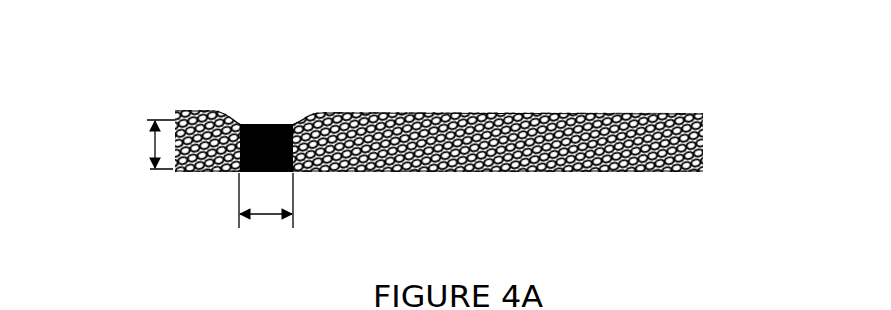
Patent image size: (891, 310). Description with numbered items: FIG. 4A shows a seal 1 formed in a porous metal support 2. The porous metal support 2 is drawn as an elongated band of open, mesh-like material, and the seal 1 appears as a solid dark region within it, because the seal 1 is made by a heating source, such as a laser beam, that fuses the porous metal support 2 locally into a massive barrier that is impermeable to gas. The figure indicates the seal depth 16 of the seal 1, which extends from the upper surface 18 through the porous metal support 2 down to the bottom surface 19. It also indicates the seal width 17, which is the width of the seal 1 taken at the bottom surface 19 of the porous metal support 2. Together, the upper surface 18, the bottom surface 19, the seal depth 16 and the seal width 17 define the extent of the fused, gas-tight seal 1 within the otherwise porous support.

The seal 1 is at (263, 125).
The porous metal support 2 is at (514, 162).
The seal depth 16 is at (155, 143).
The seal width 17 is at (260, 215).
The upper surface 18 is at (498, 112).
The bottom surface 19 is at (553, 173).